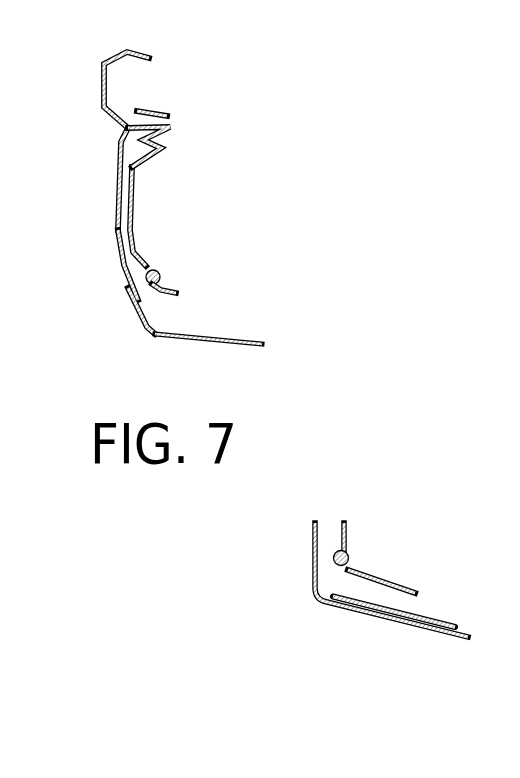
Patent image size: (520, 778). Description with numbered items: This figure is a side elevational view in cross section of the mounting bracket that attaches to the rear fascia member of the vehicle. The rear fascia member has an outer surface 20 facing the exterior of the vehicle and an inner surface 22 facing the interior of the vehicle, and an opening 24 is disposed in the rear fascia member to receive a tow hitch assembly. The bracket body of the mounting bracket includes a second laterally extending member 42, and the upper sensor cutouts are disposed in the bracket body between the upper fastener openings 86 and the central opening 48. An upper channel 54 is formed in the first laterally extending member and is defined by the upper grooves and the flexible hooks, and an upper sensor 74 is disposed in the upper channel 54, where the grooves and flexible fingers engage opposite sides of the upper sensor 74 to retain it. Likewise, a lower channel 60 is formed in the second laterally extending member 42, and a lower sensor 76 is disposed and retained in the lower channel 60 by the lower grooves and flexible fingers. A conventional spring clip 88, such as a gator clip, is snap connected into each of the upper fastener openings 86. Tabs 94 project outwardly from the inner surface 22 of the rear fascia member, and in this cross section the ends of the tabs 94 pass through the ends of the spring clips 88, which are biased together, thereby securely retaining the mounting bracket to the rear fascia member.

The outer surface 20 is at (312, 552).
The inner surface 22 is at (133, 231).
The opening 24 is at (263, 346).
The second laterally extending member 42 is at (427, 618).
The central opening 48 is at (174, 297).
The upper channel 54 is at (160, 273).
The lower channel 60 is at (350, 554).
The upper sensor 74 is at (126, 271).
The lower sensor 76 is at (340, 551).
The upper fastener openings 86 is at (127, 129).
The spring clip 88 is at (166, 138).
The tabs 94 is at (136, 124).